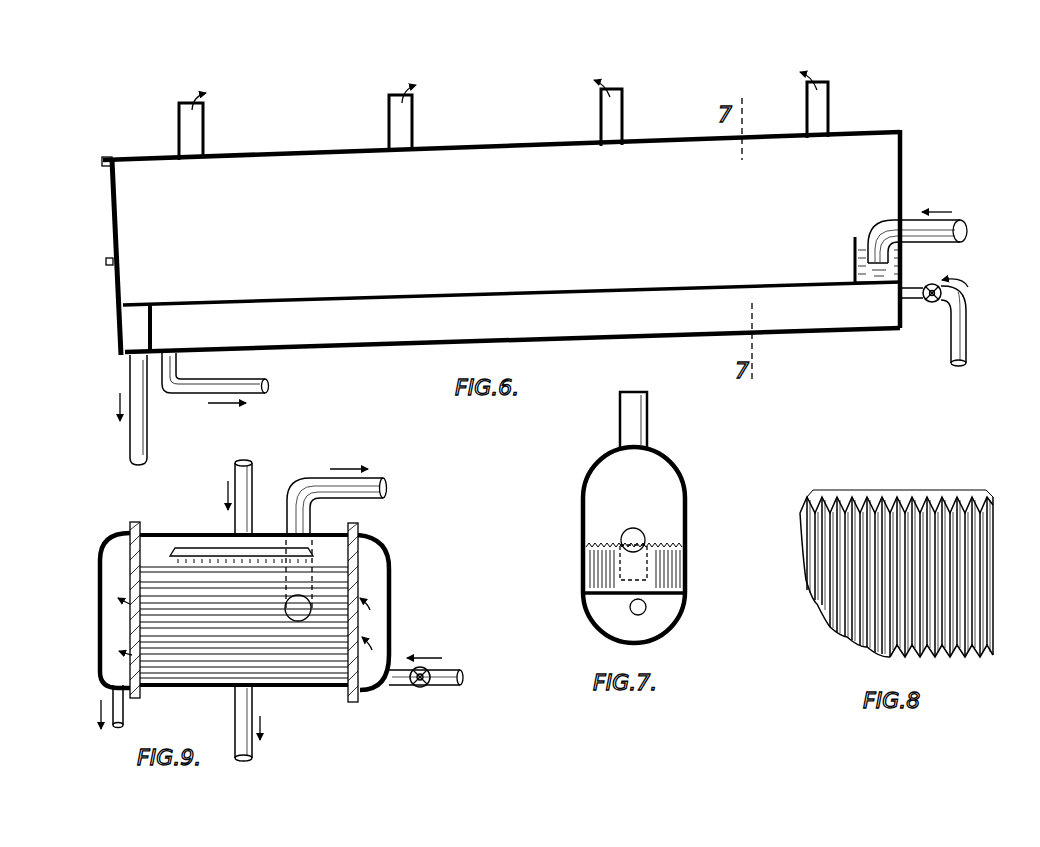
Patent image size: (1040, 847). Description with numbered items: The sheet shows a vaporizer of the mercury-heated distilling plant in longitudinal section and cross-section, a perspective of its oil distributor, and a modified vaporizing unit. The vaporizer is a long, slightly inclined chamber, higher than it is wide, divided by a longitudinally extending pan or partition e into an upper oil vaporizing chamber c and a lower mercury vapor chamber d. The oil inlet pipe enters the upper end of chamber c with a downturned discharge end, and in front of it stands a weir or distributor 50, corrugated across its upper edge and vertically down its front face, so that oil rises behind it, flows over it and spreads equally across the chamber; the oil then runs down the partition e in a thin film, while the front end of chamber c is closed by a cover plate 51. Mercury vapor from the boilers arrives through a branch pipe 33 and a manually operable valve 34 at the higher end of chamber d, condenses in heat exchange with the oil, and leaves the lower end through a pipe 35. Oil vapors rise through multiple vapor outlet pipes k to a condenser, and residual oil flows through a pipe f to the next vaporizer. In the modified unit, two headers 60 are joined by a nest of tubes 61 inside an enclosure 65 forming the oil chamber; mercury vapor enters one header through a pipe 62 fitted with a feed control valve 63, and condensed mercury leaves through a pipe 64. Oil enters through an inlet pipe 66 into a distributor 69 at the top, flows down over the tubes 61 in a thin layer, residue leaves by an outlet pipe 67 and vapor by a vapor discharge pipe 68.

In FIG. 6, the cover plate 51 is at (110, 211).
In FIG. 6, the weir or distributor 50 is at (854, 250).
In FIG. 7, the weir or distributor 50 is at (670, 556).
In FIG. 8, the weir or distributor 50 is at (987, 556).
In FIG. 6, the valve 34 is at (931, 303).
In FIG. 6, the branch pipe 33 is at (968, 335).
In FIG. 6, the pipe 35 is at (270, 386).
In FIG. 6, the vapor outlet pipe k is at (204, 126).
In FIG. 7, the vapor outlet pipe k is at (648, 420).
In FIG. 6, the oil vaporizing chamber c is at (563, 225).
In FIG. 7, the oil vaporizing chamber c is at (630, 498).
In FIG. 6, the mercury vapor chamber d is at (564, 320).
In FIG. 7, the mercury vapor chamber d is at (635, 619).
In FIG. 6, the partition e is at (681, 289).
In FIG. 7, the partition e is at (590, 596).
In FIG. 6, the pipe f is at (128, 366).
In FIG. 9, the header 60 is at (100, 563).
In FIG. 9, the tube 61 is at (300, 680).
In FIG. 9, the pipe 62 is at (447, 688).
In FIG. 9, the feed control valve 63 is at (418, 689).
In FIG. 9, the pipe 64 is at (125, 718).
In FIG. 9, the enclosure 65 is at (153, 545).
In FIG. 9, the inlet pipe 66 is at (252, 490).
In FIG. 9, the outlet pipe 67 is at (253, 756).
In FIG. 9, the vapor discharge pipe 68 is at (386, 489).
In FIG. 9, the distributor 69 is at (200, 548).